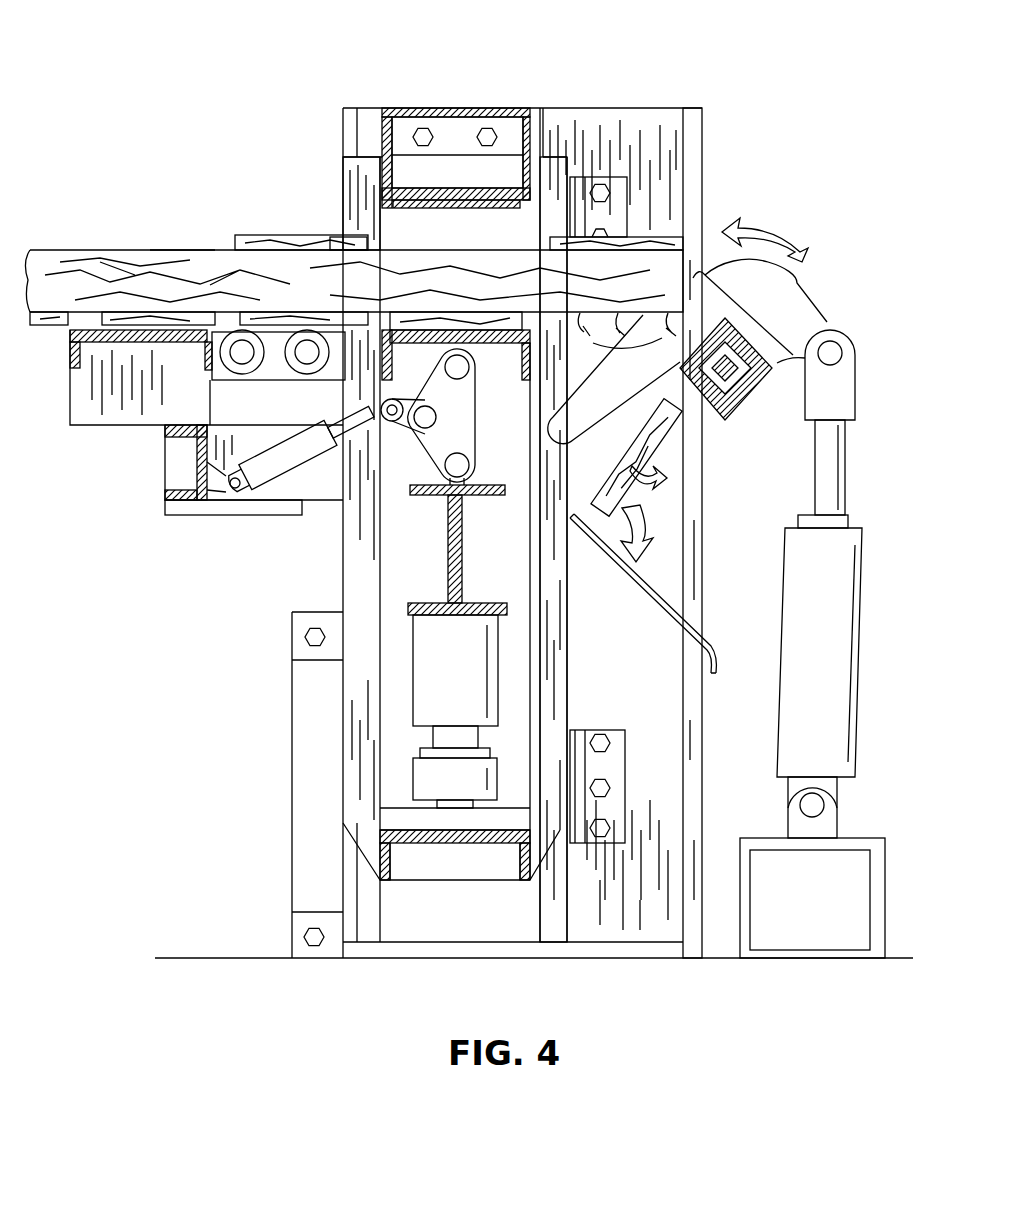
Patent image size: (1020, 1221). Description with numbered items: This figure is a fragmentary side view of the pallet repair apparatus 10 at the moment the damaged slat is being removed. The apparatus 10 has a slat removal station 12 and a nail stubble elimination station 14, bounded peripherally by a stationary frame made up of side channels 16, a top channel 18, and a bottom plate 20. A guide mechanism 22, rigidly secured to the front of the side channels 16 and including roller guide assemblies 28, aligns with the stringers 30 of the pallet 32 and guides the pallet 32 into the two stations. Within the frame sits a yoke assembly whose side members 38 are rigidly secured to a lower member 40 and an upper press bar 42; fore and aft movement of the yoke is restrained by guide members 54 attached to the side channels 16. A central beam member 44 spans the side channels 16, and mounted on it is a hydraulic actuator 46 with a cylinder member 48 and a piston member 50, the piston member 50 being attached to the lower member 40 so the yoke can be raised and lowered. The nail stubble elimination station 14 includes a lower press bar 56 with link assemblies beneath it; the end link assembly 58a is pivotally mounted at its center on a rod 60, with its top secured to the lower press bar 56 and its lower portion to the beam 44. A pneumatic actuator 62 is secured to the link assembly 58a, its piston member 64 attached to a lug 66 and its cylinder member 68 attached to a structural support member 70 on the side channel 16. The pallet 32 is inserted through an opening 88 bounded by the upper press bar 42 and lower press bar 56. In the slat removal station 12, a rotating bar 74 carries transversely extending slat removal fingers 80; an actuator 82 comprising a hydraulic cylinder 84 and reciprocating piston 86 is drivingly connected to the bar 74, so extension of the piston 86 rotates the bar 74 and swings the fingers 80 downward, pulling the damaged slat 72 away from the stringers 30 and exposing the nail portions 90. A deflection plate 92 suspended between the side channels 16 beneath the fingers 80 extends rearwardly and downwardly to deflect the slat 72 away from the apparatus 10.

The pallet repair apparatus 10 is at (692, 54).
The slat removal station 12 is at (770, 208).
The nail stubble elimination station 14 is at (467, 102).
The side channels 16 is at (672, 108).
The top channel 18 is at (395, 108).
The bottom plate 20 is at (597, 958).
The guide mechanism 22 is at (78, 428).
The roller guide assemblies 28 is at (272, 345).
The stringers 30 is at (112, 256).
The pallet 32 is at (184, 243).
The side members 38 is at (355, 160).
The lower member 40 is at (403, 882).
The upper press bar 42 is at (458, 188).
The central beam member 44 is at (455, 550).
The hydraulic actuator 46 is at (398, 652).
The cylinder member 48 is at (425, 690).
The piston member 50 is at (425, 773).
The guide members 54 is at (605, 185).
The lower press bar 56 is at (503, 345).
The end link assembly 58a is at (452, 400).
The rod 60 is at (425, 405).
The pneumatic actuator 62 is at (270, 497).
The piston member 64 is at (345, 412).
The lug 66 is at (420, 432).
The cylinder member 68 is at (322, 460).
The structural support member 70 is at (168, 500).
The damaged slat 72 is at (628, 450).
The rotating bar 74 is at (790, 318).
The slat removal fingers 80 is at (610, 398).
The actuator 82 is at (772, 690).
The hydraulic cylinder 84 is at (838, 662).
The reciprocating piston 86 is at (835, 470).
The opening 88 is at (468, 239).
The nail portions 90 is at (624, 338).
The deflection plate 92 is at (645, 585).